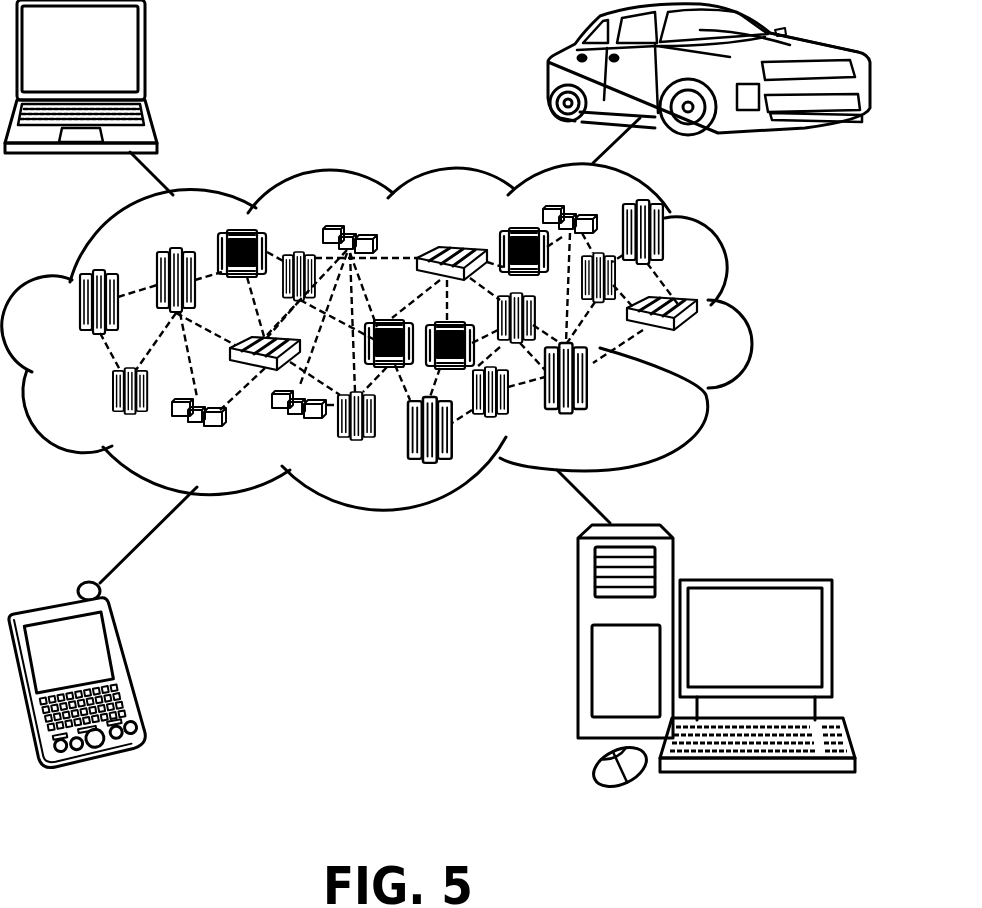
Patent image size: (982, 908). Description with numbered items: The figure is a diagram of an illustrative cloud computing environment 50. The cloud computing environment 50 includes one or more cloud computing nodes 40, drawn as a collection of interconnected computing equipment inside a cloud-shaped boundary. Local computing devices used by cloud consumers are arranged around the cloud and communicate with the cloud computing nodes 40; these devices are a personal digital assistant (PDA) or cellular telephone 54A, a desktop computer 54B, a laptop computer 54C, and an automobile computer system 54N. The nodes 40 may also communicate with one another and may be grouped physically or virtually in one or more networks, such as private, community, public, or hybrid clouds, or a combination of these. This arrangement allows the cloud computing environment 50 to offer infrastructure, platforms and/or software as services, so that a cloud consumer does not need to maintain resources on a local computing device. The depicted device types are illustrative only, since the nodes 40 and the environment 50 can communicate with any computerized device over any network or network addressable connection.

The personal digital assistant (PDA) or cellular telephone 54A is at (137, 668).
The desktop computer 54B is at (752, 580).
The laptop computer 54C is at (145, 58).
The automobile computer system 54N is at (553, 72).
The cloud computing environment 50 is at (756, 310).
The cloud computing nodes 40 is at (705, 343).